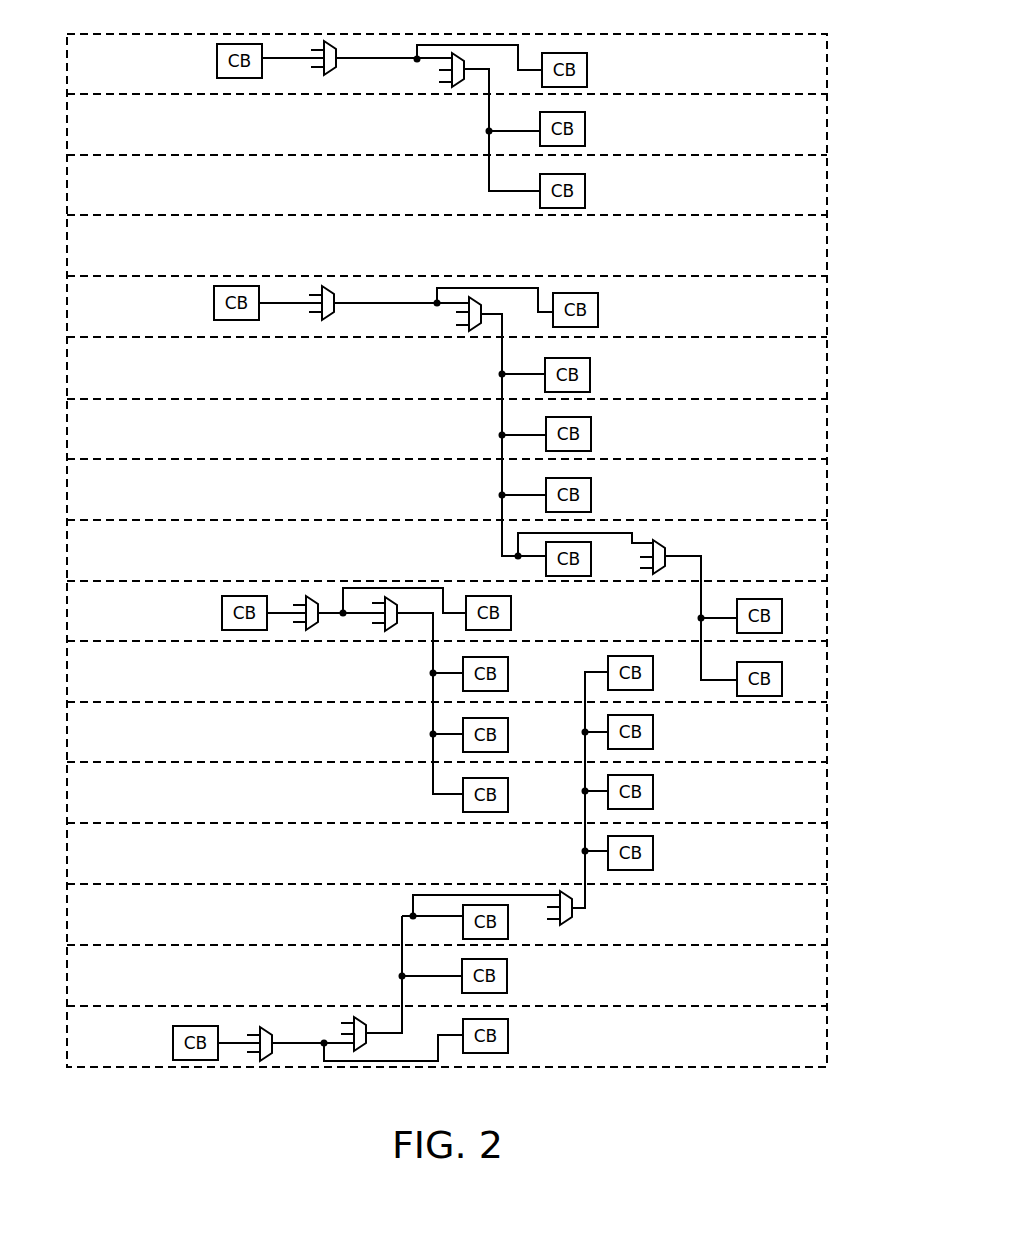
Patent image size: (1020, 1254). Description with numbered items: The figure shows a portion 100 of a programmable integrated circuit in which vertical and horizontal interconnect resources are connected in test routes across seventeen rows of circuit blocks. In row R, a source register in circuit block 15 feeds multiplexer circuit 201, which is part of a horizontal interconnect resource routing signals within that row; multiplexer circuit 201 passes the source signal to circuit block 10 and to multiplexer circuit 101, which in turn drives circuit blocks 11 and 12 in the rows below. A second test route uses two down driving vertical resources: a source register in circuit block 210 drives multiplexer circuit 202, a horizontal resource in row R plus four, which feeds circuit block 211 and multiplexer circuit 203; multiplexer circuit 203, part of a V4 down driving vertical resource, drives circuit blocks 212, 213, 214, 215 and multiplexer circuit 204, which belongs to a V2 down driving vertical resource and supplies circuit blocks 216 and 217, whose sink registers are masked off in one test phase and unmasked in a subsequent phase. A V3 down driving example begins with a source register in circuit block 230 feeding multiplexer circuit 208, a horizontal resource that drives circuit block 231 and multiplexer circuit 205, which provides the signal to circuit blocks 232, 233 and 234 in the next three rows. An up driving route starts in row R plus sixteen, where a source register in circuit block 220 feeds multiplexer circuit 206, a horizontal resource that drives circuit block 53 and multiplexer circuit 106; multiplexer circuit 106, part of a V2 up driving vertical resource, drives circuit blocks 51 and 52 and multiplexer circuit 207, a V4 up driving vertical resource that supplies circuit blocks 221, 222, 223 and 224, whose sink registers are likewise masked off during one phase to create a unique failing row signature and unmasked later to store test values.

The portion of the programmable integrated circuit 100 is at (718, 33).
The circuit block 15 is at (217, 48).
The circuit block 10 is at (587, 62).
The circuit block 11 is at (585, 122).
The circuit block 12 is at (585, 183).
The multiplexer circuit 201 is at (330, 75).
The multiplexer circuit 101 is at (462, 60).
The circuit block 210 is at (214, 291).
The multiplexer circuit 202 is at (328, 320).
The multiplexer circuit 203 is at (480, 303).
The circuit block 211 is at (598, 301).
The circuit block 212 is at (590, 367).
The circuit block 213 is at (591, 425).
The circuit block 214 is at (591, 486).
The circuit block 215 is at (591, 550).
The multiplexer circuit 204 is at (664, 545).
The circuit block 216 is at (782, 609).
The circuit block 217 is at (782, 672).
The circuit block 230 is at (222, 601).
The multiplexer circuit 208 is at (312, 629).
The multiplexer circuit 205 is at (390, 630).
The circuit block 231 is at (511, 622).
The circuit block 232 is at (508, 679).
The circuit block 233 is at (508, 740).
The circuit block 234 is at (508, 800).
The circuit block 221 is at (653, 665).
The circuit block 222 is at (653, 724).
The circuit block 223 is at (653, 784).
The circuit block 224 is at (653, 845).
The multiplexer circuit 207 is at (565, 922).
The circuit block 51 is at (508, 912).
The circuit block 52 is at (507, 966).
The circuit block 53 is at (508, 1030).
The circuit block 220 is at (193, 1060).
The multiplexer circuit 206 is at (267, 1061).
The multiplexer circuit 106 is at (363, 1049).